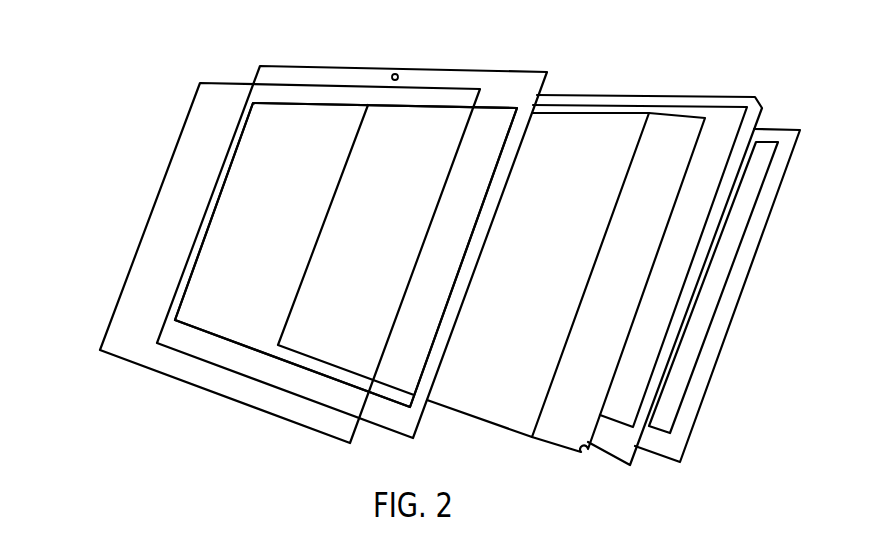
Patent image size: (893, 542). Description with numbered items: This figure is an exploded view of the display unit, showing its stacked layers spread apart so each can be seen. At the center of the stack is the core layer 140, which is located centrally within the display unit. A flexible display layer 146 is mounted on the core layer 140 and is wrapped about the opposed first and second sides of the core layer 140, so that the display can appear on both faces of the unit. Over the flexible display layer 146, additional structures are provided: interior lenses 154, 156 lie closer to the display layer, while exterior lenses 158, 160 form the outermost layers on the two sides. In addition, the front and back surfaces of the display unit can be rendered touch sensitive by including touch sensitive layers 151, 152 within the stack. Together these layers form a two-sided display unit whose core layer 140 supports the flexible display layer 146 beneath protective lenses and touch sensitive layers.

The core layer 140 is at (672, 148).
The flexible display layer 146 is at (612, 132).
The touch sensitive layer 151 is at (270, 102).
The touch sensitive layer 152 is at (753, 172).
The interior lens 154 is at (507, 78).
The interior lens 156 is at (732, 102).
The exterior lens 158 is at (127, 306).
The exterior lens 160 is at (752, 243).